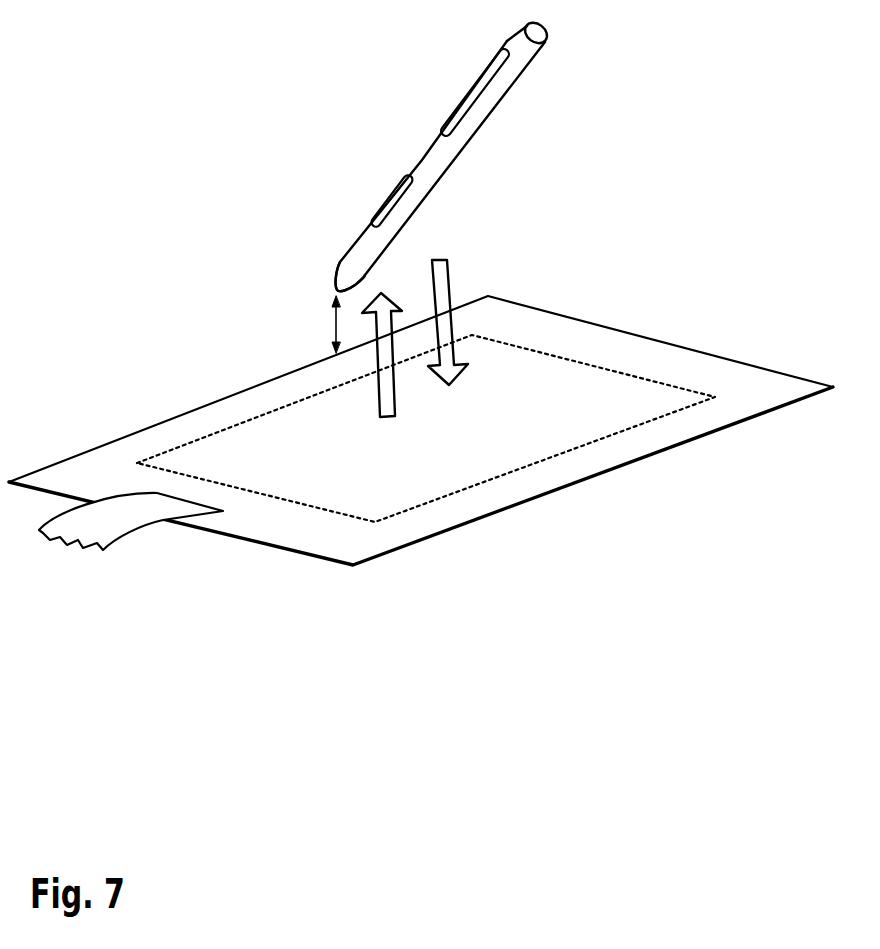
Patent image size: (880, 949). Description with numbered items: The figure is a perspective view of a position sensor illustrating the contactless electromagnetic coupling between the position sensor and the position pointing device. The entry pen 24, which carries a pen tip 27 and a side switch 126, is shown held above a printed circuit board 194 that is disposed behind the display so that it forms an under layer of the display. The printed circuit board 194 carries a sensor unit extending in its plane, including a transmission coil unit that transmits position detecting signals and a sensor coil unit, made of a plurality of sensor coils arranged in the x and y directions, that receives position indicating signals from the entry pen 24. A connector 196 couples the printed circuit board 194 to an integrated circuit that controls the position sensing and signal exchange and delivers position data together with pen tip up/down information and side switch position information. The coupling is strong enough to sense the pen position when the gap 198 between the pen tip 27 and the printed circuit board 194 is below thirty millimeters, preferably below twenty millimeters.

The entry pen 24 is at (507, 90).
The side switch 126 is at (390, 194).
The pen tip 27 is at (335, 291).
The gap 198 is at (332, 326).
The printed circuit board 194 is at (593, 480).
The connector 196 is at (127, 535).